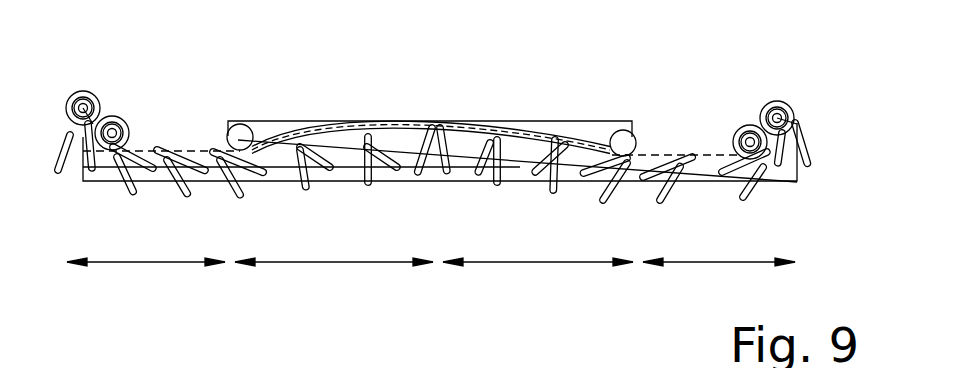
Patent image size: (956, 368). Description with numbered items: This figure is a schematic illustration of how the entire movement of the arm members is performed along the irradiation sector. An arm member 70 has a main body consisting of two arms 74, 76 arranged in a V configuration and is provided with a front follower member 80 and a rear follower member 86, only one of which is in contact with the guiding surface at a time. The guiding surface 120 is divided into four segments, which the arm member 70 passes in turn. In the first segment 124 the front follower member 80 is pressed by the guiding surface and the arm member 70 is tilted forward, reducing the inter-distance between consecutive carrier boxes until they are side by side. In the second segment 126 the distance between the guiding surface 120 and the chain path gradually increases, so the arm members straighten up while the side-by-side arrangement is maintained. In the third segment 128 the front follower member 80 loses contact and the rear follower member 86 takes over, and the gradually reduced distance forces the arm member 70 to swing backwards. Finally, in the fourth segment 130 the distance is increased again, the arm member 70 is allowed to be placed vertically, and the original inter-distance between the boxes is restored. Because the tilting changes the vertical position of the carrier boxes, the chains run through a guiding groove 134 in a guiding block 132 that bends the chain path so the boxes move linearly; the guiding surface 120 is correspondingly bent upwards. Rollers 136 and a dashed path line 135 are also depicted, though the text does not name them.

The rollers 136 is at (78, 92).
The guiding groove 134 is at (330, 133).
The guiding block 132 is at (563, 121).
The web path line 135 is at (705, 154).
The first segment 124 is at (410, 180).
The arm member 70 is at (125, 182).
The arm 76 is at (185, 181).
The front follower member 80 is at (305, 173).
The rear follower member 86 is at (617, 190).
The arm 74 is at (762, 175).
The fourth segment 130 is at (146, 284).
The third segment 128 is at (334, 284).
The second segment 126 is at (538, 282).
The guiding surface 120 is at (719, 283).